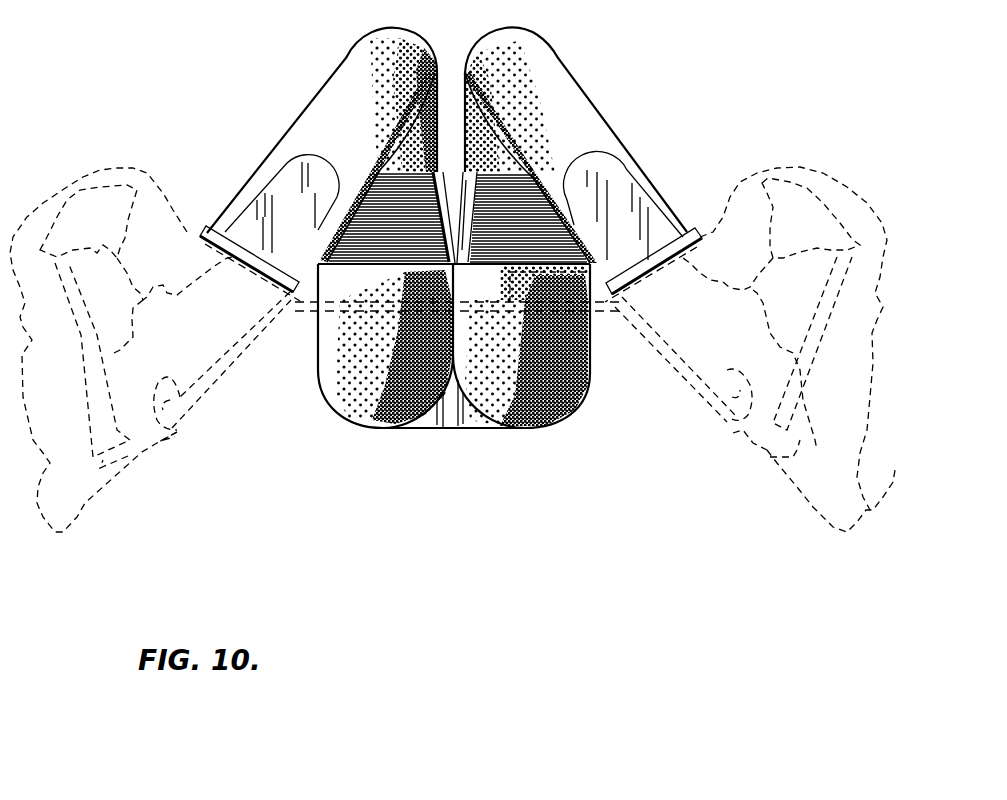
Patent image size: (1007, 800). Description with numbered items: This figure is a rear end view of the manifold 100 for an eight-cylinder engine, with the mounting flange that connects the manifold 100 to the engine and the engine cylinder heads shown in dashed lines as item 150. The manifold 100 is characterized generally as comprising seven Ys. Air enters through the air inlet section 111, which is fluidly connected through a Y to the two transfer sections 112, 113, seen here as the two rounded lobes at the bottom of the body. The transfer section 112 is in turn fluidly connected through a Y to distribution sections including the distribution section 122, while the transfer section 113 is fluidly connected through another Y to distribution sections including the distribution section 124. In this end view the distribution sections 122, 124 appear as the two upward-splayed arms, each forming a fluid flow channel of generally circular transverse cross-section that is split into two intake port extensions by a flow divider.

The manifold 100 is at (583, 522).
The air inlet section 111 is at (477, 422).
The transfer section 112 is at (363, 410).
The transfer section 113 is at (550, 428).
The distribution section 122 is at (318, 105).
The distribution section 124 is at (550, 87).
The phantom handle/hand outline 150 is at (456, 349).